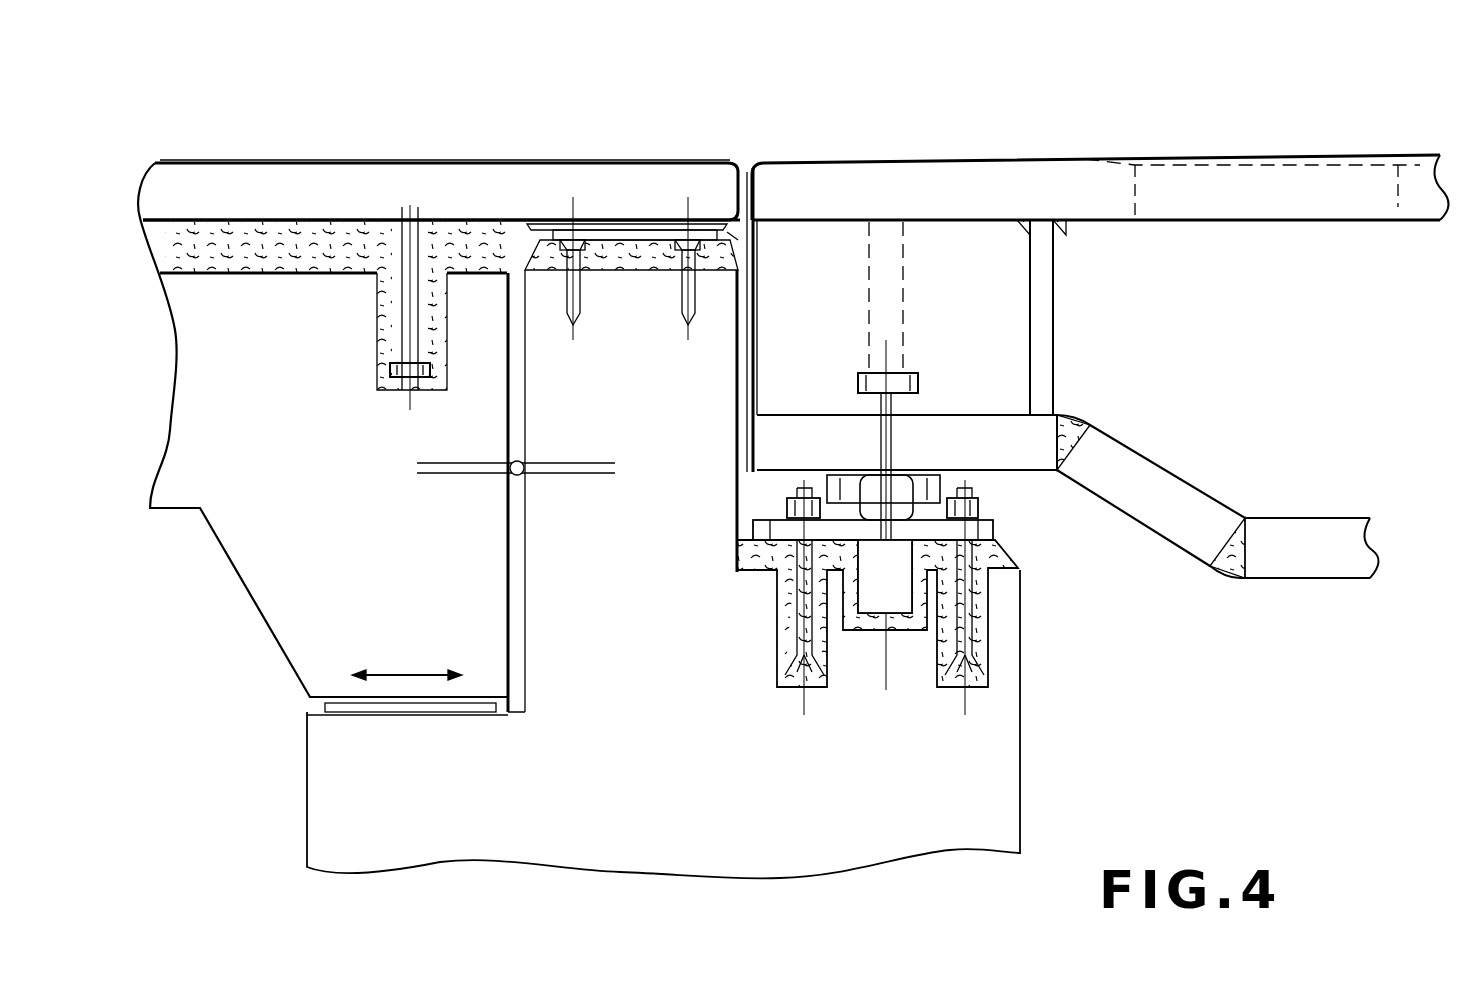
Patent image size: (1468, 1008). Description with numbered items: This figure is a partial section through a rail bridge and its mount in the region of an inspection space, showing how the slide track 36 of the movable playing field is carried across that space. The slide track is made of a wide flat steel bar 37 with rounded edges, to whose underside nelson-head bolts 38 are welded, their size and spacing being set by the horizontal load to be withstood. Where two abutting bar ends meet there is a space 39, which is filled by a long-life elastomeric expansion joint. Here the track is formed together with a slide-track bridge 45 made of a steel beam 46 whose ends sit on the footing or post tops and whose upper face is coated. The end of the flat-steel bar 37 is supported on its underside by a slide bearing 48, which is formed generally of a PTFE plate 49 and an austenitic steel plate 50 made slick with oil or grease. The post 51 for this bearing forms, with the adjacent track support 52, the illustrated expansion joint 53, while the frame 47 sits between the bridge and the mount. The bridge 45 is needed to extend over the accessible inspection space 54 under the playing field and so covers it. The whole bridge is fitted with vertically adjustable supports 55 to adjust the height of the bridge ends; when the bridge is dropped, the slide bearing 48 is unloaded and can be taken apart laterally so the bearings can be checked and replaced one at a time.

The slide track 36 is at (441, 150).
The wide steel sheet or bar 37 is at (328, 185).
The nelson-head bolt 38 is at (410, 322).
The space 39 is at (745, 172).
The slide-track bridge 45 is at (1293, 148).
The steel beam 46 is at (1185, 195).
The support frame 47 is at (985, 323).
The slide bearing 48 is at (742, 240).
The PTFE plate 49 is at (630, 238).
The austenitic steel plate 50 is at (597, 226).
The post 51 is at (652, 583).
The track support 52 is at (424, 583).
The expansion joint 53 is at (510, 430).
The inspection space 54 is at (1272, 727).
The vertically adjustable support 55 is at (1000, 505).